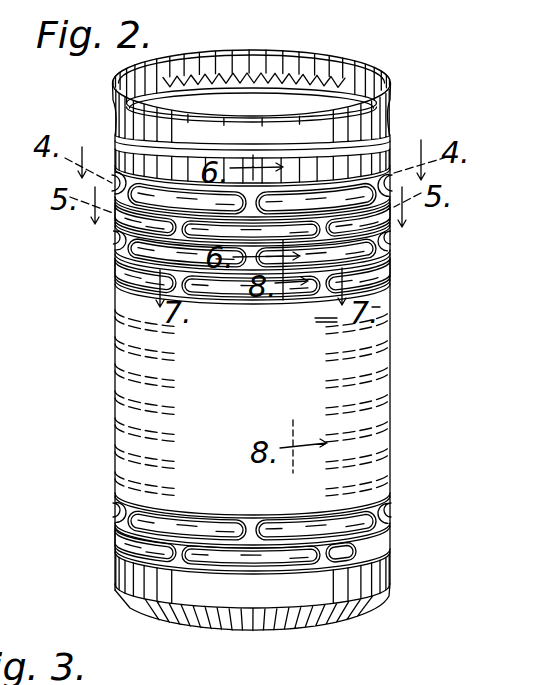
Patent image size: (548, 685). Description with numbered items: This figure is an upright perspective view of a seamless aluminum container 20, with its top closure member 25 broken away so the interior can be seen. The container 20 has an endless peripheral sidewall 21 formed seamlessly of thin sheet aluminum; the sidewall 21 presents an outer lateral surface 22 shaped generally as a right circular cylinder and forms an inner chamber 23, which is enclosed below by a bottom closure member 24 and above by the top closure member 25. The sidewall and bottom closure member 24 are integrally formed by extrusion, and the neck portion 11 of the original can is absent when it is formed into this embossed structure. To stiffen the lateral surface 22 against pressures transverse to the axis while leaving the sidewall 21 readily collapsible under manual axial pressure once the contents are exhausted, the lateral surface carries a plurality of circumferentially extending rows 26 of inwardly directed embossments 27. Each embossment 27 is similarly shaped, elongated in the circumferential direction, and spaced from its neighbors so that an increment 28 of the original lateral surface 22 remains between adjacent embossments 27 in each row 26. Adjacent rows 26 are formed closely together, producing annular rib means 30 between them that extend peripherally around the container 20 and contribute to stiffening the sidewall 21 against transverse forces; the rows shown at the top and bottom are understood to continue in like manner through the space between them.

The neck portion 11 is at (390, 130).
The seamless aluminum container 20 is at (353, 48).
The peripheral sidewall 21 is at (104, 140).
The outer lateral surface 22 is at (391, 138).
The inner chamber 23 is at (275, 95).
The bottom closure member 24 is at (232, 634).
The top closure member 25 is at (228, 66).
The rows of embossments 26 is at (113, 257).
The embossment 27 is at (393, 239).
The increment 28 is at (113, 271).
The annular rib means 30 is at (340, 210).